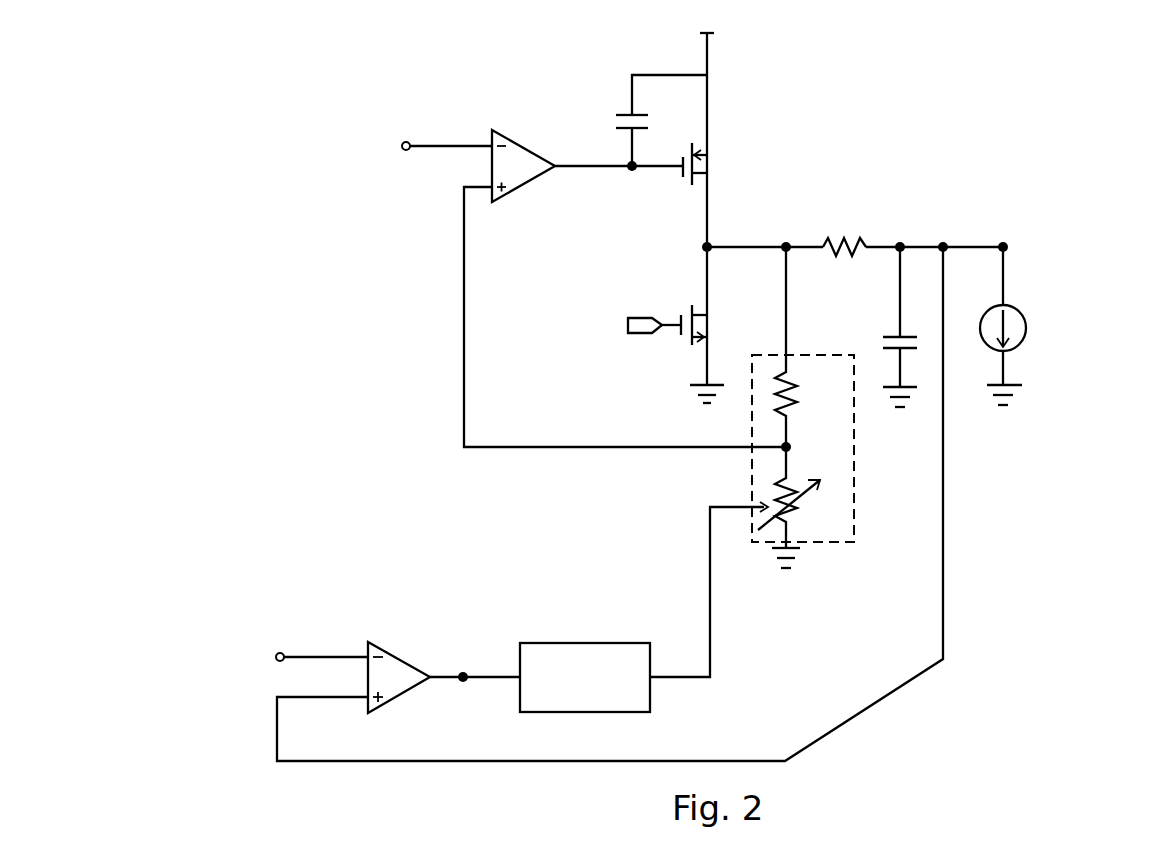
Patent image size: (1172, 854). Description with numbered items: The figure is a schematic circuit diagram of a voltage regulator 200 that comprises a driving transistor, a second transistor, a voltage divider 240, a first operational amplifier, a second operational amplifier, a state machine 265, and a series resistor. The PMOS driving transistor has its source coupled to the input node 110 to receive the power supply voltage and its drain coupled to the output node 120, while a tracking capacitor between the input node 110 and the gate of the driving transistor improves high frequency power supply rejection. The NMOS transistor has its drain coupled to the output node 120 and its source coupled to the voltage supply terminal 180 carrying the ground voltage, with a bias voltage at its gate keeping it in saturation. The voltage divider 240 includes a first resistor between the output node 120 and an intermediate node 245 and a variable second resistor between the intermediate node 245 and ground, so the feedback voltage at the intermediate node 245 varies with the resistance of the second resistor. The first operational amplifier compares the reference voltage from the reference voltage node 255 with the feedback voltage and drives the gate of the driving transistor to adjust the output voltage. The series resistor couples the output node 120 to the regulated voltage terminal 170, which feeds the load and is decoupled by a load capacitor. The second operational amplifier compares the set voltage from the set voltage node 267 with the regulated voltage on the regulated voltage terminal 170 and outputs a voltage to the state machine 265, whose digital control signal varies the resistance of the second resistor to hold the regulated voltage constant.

The voltage regulator 200 is at (300, 28).
The input node 110 is at (701, 32).
The output node 120 is at (790, 250).
The regulated voltage terminal 170 is at (1005, 245).
The voltage supply terminal 180 is at (701, 383).
The voltage divider 240 is at (854, 533).
The intermediate node 245 is at (783, 450).
The reference voltage node 255 is at (410, 144).
The state machine 265 is at (557, 642).
The set voltage node 267 is at (278, 655).